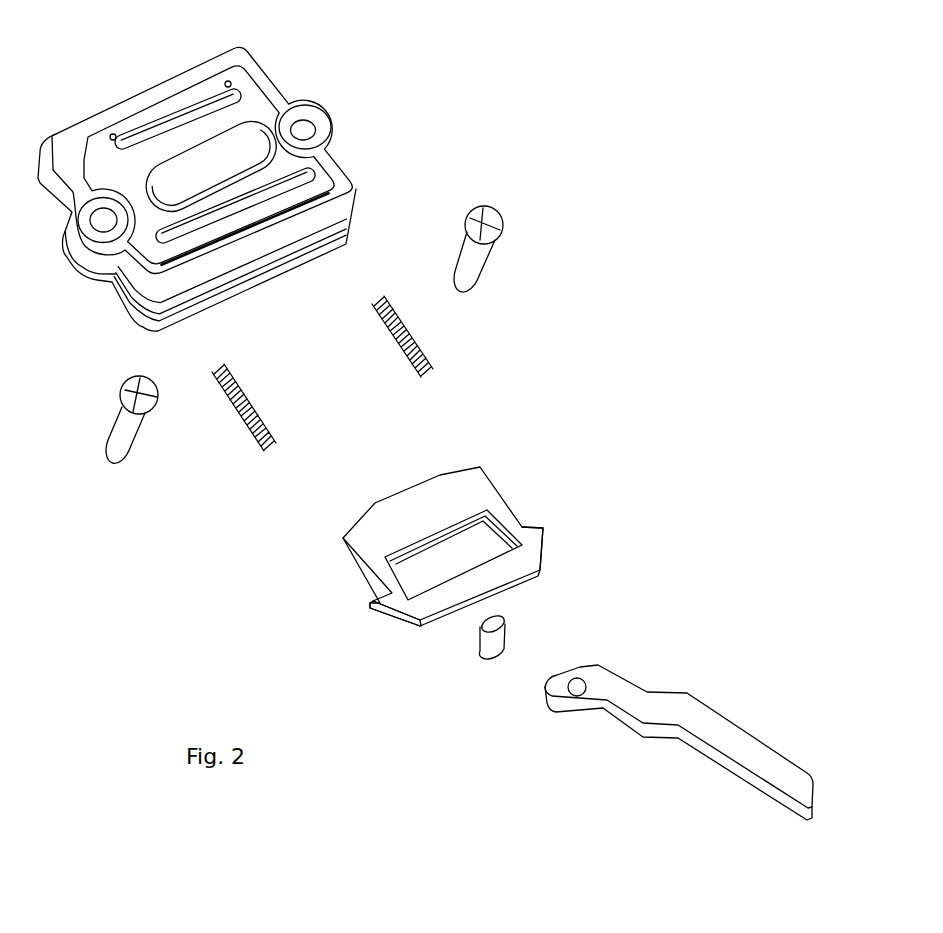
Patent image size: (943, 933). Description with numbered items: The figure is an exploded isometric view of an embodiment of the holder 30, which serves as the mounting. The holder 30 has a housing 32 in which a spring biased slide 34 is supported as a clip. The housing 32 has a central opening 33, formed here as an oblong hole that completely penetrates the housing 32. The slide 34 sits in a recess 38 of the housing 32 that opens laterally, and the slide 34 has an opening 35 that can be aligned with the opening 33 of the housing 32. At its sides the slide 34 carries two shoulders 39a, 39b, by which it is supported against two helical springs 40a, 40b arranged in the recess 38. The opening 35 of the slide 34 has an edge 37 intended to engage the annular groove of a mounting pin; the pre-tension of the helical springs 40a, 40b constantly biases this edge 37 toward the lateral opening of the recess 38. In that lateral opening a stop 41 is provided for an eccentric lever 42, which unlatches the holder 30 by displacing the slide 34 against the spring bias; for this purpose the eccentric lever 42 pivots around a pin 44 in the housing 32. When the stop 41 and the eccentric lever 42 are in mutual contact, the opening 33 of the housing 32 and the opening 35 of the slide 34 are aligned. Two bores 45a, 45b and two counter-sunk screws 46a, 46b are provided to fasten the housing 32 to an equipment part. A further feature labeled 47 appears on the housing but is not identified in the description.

The holder 30 is at (558, 326).
The housing 32 is at (221, 176).
The central opening 33 is at (213, 180).
The spring biased slide 34 is at (489, 561).
The opening of the slide 35 is at (488, 552).
The edge 37 is at (442, 543).
The recess 38 is at (322, 240).
The shoulder 39a is at (373, 598).
The shoulder 39b is at (541, 528).
The helical spring 40a is at (428, 360).
The helical spring 40b is at (272, 435).
The stop 41 is at (248, 274).
The eccentric lever 42 is at (705, 723).
The pin 44 is at (498, 625).
The bore 45a is at (106, 221).
The bore 45b is at (304, 130).
The counter-sunk screw 46a is at (136, 387).
The counter-sunk screw 46b is at (484, 212).
The top surface 47 is at (298, 157).